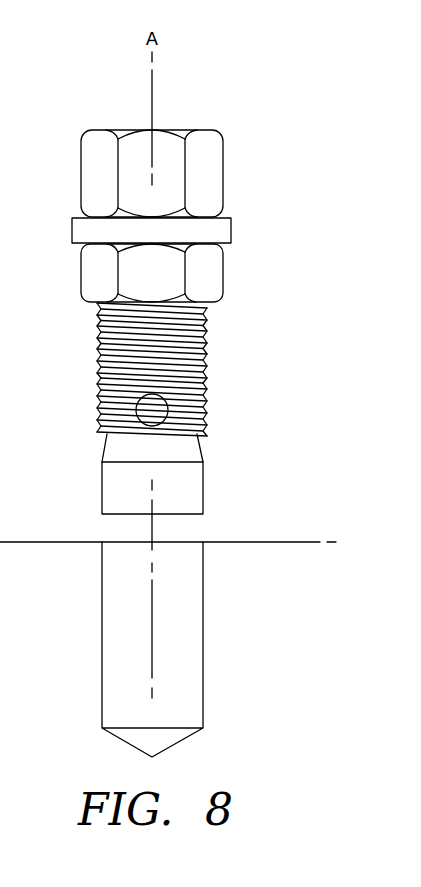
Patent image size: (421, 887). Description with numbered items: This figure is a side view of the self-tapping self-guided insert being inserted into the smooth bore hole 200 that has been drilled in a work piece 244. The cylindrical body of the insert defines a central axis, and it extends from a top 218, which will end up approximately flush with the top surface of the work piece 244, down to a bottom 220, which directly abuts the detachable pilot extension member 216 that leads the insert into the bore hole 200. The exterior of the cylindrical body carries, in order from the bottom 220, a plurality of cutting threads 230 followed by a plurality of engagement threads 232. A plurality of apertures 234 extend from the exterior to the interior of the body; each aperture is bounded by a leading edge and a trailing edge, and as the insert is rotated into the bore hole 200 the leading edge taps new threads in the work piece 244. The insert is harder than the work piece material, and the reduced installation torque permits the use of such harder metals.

The smooth bore hole 200 is at (102, 576).
The detachable pilot extension member 216 is at (197, 488).
The top 218 is at (177, 301).
The bottom 220 is at (123, 433).
The cutting threads 230 is at (92, 385).
The engagement threads 232 is at (93, 303).
The apertures 234 is at (152, 412).
The work piece 244 is at (284, 590).